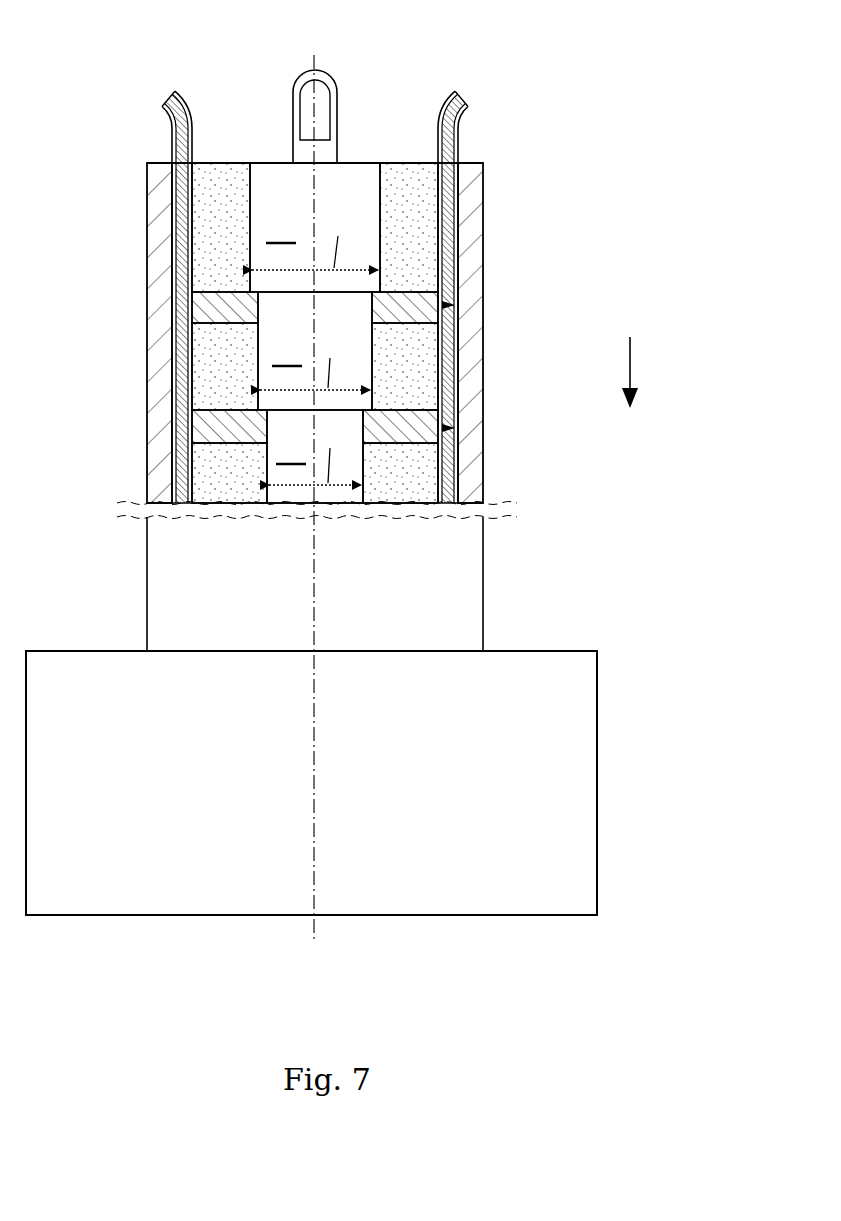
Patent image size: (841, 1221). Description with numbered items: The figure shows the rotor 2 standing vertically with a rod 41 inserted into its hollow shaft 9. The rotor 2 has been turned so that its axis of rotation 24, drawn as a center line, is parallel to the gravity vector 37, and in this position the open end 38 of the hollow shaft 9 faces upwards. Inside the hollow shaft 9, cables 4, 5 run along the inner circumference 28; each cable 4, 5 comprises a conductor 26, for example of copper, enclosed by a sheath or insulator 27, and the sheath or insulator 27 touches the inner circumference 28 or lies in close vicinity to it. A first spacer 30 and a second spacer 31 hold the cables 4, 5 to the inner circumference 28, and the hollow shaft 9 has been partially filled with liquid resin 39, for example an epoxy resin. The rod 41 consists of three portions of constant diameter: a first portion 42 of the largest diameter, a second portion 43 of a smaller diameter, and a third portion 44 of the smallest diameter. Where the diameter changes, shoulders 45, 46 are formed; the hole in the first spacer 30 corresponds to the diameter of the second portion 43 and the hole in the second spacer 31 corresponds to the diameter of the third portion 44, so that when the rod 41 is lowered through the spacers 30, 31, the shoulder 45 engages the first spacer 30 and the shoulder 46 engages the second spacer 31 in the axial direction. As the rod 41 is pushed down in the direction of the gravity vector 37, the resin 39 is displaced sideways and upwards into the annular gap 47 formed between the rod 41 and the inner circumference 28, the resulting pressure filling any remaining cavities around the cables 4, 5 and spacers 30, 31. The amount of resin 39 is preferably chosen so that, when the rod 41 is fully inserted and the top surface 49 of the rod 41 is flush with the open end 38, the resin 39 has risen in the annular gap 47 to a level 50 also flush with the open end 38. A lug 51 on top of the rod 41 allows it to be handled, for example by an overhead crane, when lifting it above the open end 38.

The rotor 2 is at (634, 733).
The cable 4 is at (460, 142).
The cable 5 is at (170, 142).
The hollow shaft 9 is at (486, 247).
The axis of rotation 24 is at (318, 731).
The conductor 26 is at (165, 100).
The sheath or insulator 27 is at (184, 100).
The inner circumference 28 is at (147, 232).
The first spacer 30 is at (483, 313).
The second spacer 31 is at (483, 433).
The gravity vector 37 is at (634, 358).
The open end 38 is at (225, 163).
The resin 39 is at (483, 485).
The rod 41 is at (265, 158).
The first portion 42 is at (315, 227).
The second portion 43 is at (315, 351).
The third portion 44 is at (315, 456).
The shoulder 45 is at (147, 345).
The shoulder 46 is at (147, 460).
The annular gap 47 is at (483, 193).
The top surface 49 is at (355, 163).
The level 50 is at (398, 163).
The lug 51 is at (316, 66).